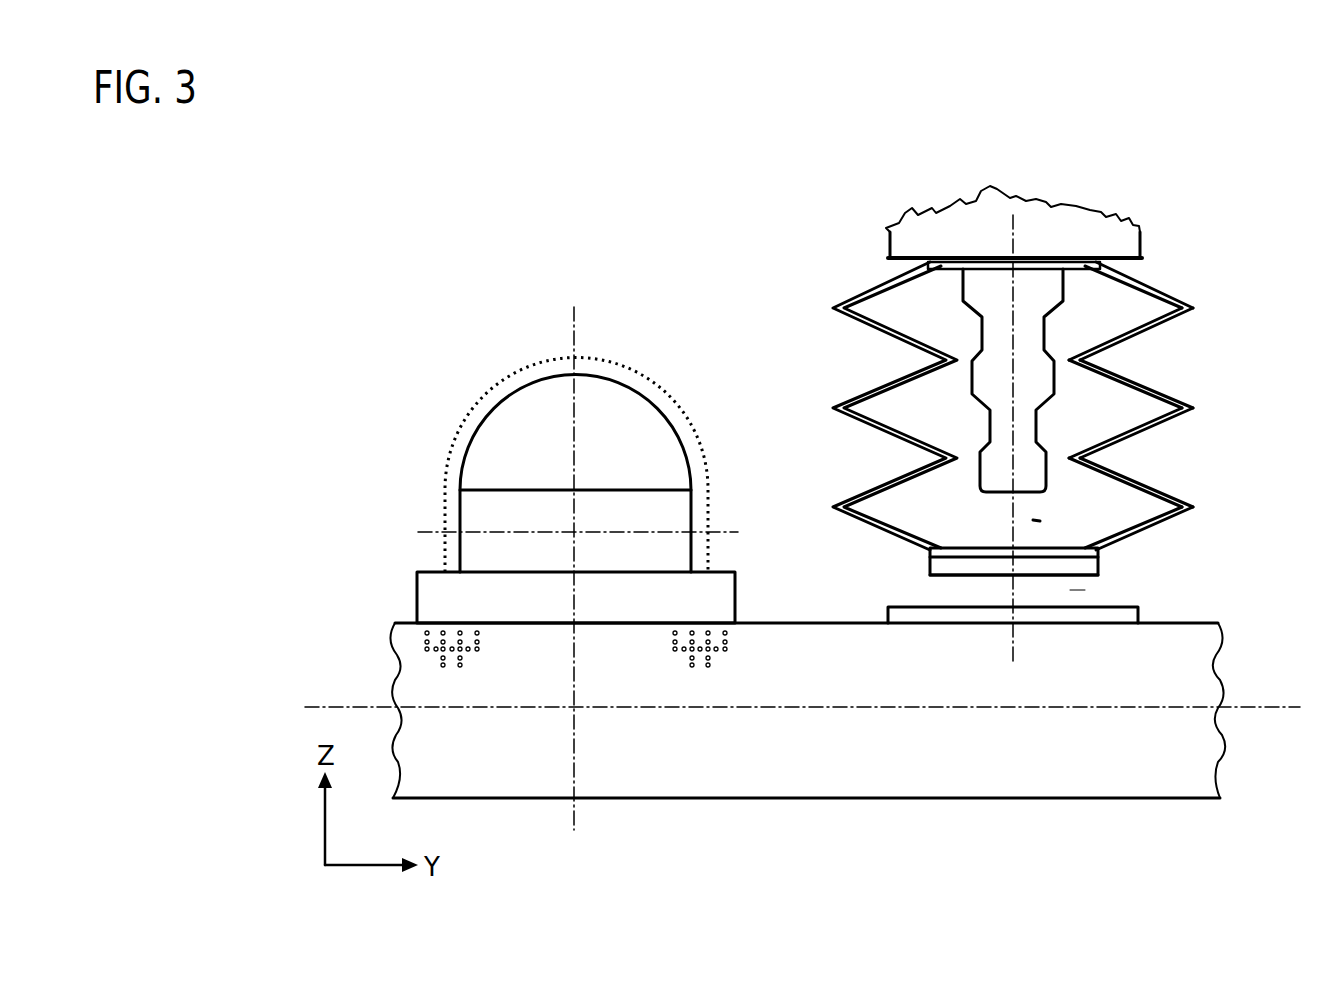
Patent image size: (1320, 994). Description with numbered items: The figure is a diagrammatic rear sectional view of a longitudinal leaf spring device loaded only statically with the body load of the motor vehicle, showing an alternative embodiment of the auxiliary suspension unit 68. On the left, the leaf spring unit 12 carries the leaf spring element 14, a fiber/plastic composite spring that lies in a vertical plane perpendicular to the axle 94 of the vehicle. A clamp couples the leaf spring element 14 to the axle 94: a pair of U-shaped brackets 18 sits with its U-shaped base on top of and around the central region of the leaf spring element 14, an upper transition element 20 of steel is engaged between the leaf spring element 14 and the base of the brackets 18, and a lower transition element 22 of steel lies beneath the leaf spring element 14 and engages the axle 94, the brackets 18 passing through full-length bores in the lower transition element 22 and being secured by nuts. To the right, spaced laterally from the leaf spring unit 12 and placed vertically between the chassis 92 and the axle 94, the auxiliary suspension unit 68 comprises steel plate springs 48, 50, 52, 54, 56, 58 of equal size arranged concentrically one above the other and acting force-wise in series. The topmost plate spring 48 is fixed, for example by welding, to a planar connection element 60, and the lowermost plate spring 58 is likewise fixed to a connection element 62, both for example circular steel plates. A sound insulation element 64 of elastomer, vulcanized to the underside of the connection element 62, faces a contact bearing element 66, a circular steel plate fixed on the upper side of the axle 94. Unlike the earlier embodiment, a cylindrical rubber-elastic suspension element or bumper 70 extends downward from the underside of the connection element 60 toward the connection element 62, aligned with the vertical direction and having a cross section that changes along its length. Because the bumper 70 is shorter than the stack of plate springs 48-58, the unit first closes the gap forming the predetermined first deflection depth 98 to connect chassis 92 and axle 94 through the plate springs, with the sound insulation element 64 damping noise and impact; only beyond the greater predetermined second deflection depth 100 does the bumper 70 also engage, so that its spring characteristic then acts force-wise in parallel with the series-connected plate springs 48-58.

The leaf spring unit 12 is at (534, 440).
The leaf spring element 14 is at (477, 517).
The U-shaped brackets 18 is at (538, 373).
The upper transition element 20 is at (635, 425).
The lower transition element 22 is at (448, 602).
The topmost plate spring 48 is at (1148, 283).
The suspension element 50 is at (1148, 338).
The suspension element 52 is at (1133, 385).
The suspension element 54 is at (1135, 433).
The suspension element 56 is at (1132, 485).
The lowermost plate spring 58 is at (1153, 532).
The connection element 60 is at (1052, 262).
The connection element 62 is at (952, 548).
The sound insulation element 64 is at (1098, 572).
The contact bearing element 66 is at (935, 617).
The auxiliary suspension unit 68 is at (1033, 409).
The suspension element or bumper 70 is at (992, 335).
The chassis 92 is at (922, 235).
The axle 94 is at (1148, 772).
The predetermined first deflection depth 98 is at (1189, 639).
The predetermined second deflection depth 100 is at (1172, 558).